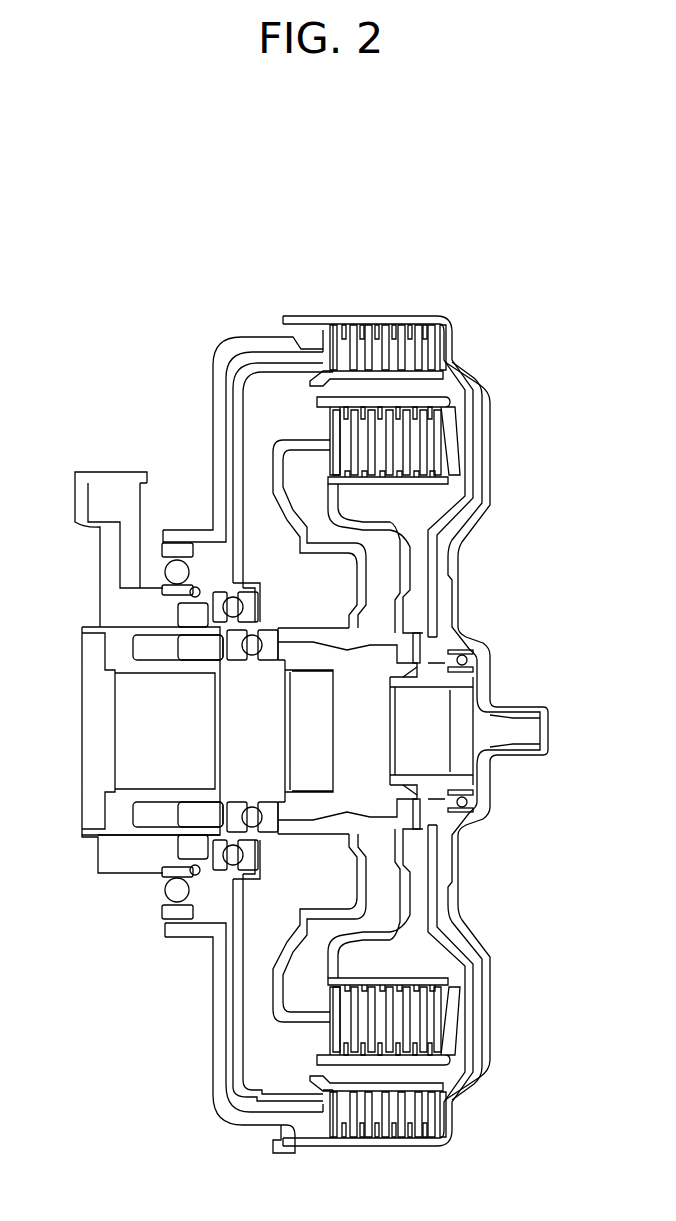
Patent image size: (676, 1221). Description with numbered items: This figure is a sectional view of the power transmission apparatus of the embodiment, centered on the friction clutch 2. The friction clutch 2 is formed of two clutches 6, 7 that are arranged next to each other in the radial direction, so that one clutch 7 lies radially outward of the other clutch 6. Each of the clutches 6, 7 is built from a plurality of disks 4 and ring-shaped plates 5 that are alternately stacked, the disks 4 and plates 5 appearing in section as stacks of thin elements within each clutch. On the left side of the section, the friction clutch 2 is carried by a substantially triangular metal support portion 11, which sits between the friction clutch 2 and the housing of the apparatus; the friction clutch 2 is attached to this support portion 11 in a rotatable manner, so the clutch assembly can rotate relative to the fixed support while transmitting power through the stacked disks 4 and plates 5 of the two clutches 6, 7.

The friction clutch 2 is at (231, 302).
The disks 4 is at (440, 471).
The ring-shaped plates 5 is at (440, 427).
The clutch 6 is at (437, 390).
The clutch 7 is at (410, 310).
The support portion 11 is at (123, 875).